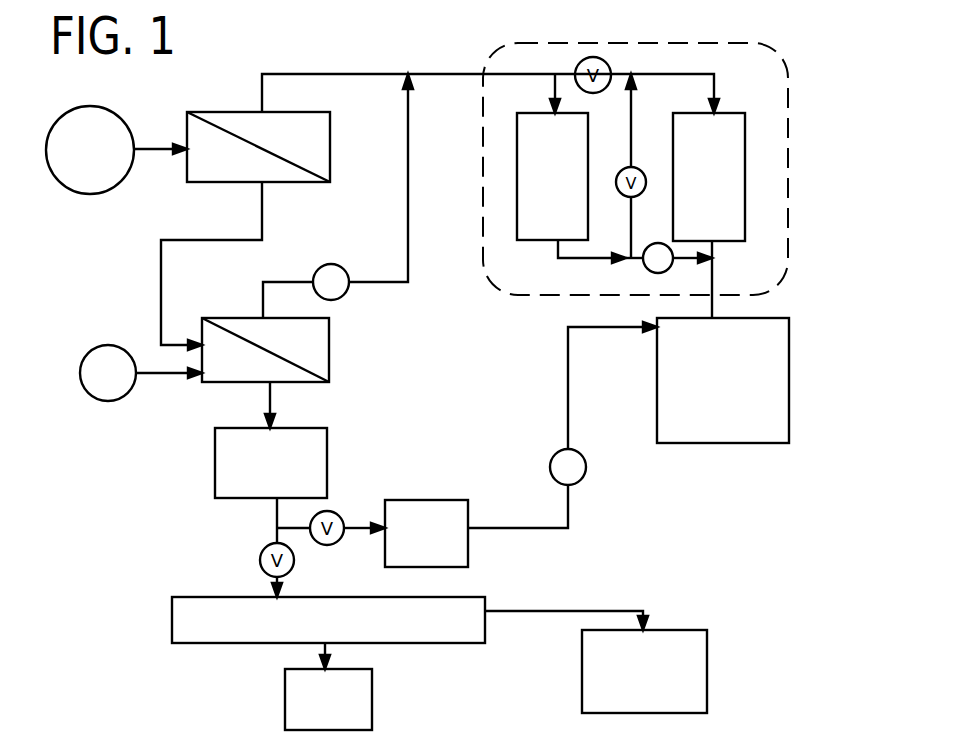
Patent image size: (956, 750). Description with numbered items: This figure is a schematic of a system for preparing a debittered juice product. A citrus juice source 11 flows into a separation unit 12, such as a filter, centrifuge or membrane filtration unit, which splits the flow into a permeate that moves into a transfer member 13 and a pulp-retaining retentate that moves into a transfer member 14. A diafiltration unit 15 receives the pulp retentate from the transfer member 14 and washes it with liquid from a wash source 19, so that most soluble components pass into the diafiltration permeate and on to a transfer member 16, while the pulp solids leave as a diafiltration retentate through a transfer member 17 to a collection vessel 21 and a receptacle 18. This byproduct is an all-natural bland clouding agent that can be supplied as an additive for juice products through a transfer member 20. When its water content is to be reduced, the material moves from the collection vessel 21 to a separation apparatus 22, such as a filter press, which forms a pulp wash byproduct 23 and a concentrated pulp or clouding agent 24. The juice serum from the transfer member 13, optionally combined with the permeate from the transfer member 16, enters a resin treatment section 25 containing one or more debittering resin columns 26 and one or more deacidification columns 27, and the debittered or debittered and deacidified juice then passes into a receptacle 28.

The juice source 11 is at (78, 163).
The separation unit 12 is at (330, 147).
The transfer member 13 is at (292, 74).
The transfer member 14 is at (262, 215).
The diafiltration unit 15 is at (329, 345).
The transfer member 16 is at (307, 282).
The transfer member 17 is at (270, 398).
The receptacle 18 is at (414, 543).
The wash source 19 is at (96, 386).
The transfer member 20 is at (568, 400).
The collection vessel 21 is at (259, 472).
The separation apparatus 22 is at (316, 622).
The pulp wash byproduct 23 is at (632, 676).
The concentrated pulp or clouding agent 24 is at (316, 704).
The resin treatment section 25 is at (788, 262).
The column 26 is at (540, 188).
The deacidification column 27 is at (697, 188).
The receptacle 28 is at (711, 386).